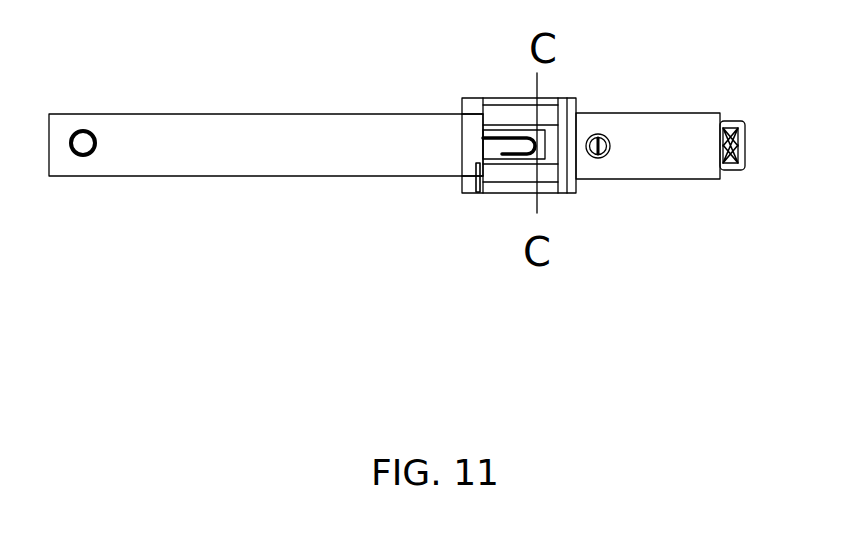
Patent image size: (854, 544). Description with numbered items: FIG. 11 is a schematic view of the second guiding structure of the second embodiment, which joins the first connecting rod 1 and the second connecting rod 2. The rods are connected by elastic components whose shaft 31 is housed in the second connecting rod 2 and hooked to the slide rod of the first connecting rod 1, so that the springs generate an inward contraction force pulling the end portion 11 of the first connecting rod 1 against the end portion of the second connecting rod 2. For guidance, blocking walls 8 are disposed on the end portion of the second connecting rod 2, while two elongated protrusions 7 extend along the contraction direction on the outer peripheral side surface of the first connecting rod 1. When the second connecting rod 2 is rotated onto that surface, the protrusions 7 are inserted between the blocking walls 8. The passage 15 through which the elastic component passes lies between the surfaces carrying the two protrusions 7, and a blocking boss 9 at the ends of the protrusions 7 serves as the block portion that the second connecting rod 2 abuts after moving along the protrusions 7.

The first connecting rod 1 is at (680, 146).
The second connecting rod 2 is at (216, 152).
The elongated protrusions 7 is at (495, 118).
The blocking walls 8 is at (475, 123).
The blocking boss 9 is at (573, 108).
The end portion 11 is at (573, 148).
The passage 15 is at (536, 128).
The shaft 31 is at (497, 158).